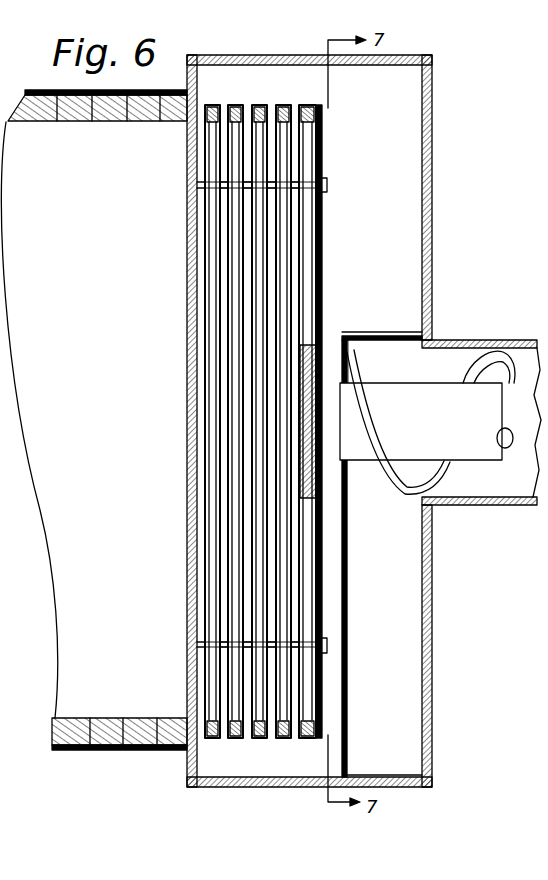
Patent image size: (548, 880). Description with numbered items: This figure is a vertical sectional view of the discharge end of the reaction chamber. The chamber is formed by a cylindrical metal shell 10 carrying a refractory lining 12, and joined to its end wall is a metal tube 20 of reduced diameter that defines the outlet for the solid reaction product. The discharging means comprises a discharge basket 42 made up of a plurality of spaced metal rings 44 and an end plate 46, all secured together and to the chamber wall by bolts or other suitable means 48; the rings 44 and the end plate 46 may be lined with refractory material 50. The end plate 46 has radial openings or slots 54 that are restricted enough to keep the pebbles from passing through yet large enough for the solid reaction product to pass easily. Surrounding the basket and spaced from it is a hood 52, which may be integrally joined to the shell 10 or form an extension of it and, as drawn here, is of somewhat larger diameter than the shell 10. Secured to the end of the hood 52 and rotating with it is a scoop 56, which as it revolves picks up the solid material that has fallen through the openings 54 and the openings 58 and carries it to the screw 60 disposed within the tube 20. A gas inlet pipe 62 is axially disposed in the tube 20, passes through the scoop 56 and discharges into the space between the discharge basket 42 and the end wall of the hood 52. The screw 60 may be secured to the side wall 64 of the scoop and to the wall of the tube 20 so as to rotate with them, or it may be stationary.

The cylindrical metal shell 10 is at (105, 750).
The refractory lining 12 is at (63, 751).
The tube 20 is at (472, 342).
The discharge basket 42 is at (283, 288).
The spaced metal rings 44 is at (283, 103).
The end plate 46 is at (320, 353).
The bolts 48 is at (327, 177).
The refractory material 50 is at (289, 737).
The hood 52 is at (432, 218).
The radial openings 54 is at (322, 310).
The scoop 56 is at (347, 690).
The openings 58 is at (246, 738).
The screw 60 is at (372, 378).
The gas inlet pipe 62 is at (442, 378).
The side wall 64 is at (335, 361).